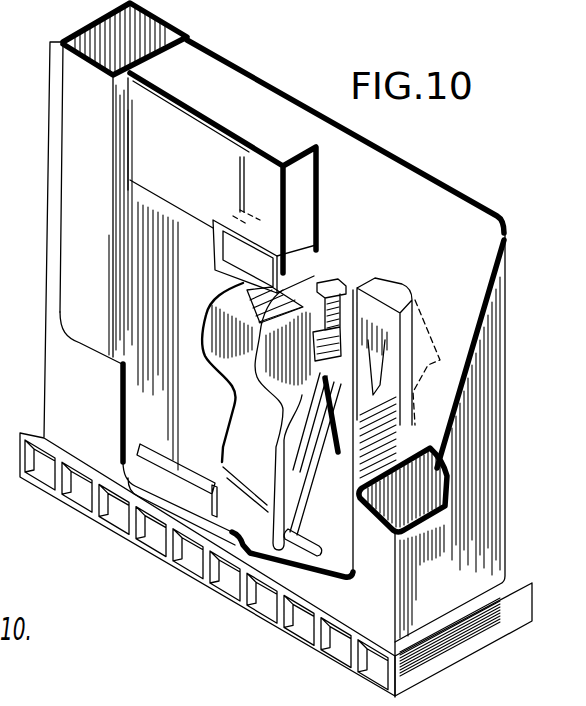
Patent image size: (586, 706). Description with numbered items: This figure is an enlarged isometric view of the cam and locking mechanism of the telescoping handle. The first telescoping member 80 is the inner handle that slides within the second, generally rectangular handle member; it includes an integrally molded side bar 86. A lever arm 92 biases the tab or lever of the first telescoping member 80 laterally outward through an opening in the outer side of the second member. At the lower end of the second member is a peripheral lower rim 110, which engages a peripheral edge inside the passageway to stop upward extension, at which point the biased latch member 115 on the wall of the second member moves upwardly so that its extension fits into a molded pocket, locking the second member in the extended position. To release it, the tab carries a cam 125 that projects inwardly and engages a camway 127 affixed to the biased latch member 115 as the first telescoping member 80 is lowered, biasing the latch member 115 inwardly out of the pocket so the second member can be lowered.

The side bar 86 is at (63, 143).
The first telescoping member 80 is at (75, 263).
The camway 127 is at (323, 280).
The lever arm 92 is at (242, 463).
The biased latch member 115 is at (355, 310).
The cam 125 is at (302, 478).
The peripheral lower rim 110 is at (510, 583).